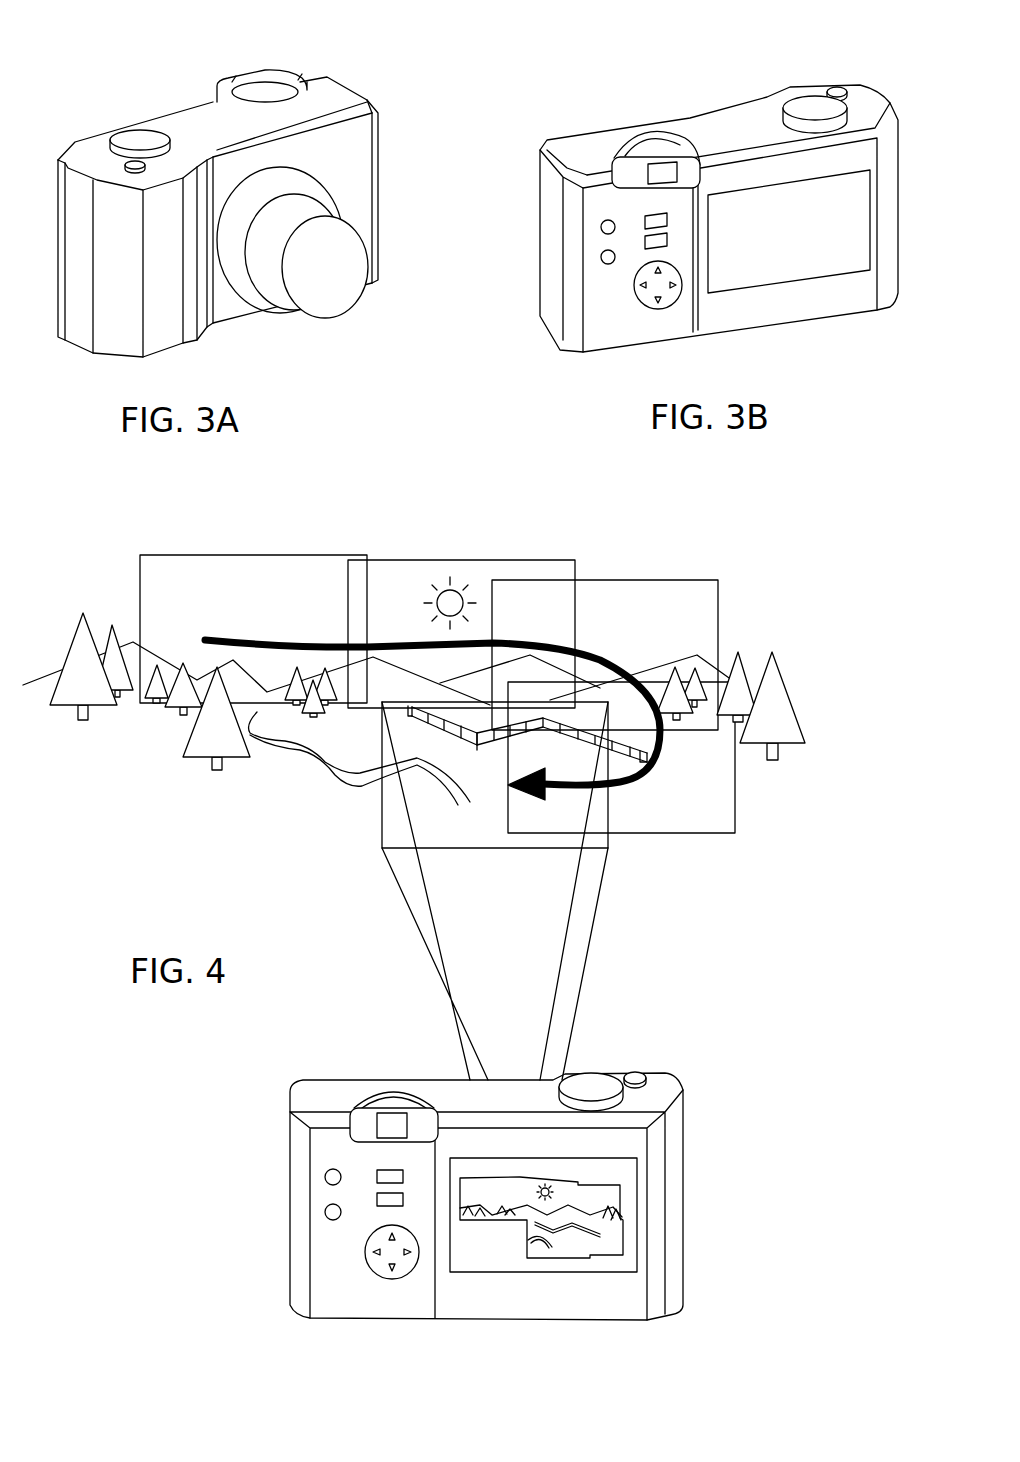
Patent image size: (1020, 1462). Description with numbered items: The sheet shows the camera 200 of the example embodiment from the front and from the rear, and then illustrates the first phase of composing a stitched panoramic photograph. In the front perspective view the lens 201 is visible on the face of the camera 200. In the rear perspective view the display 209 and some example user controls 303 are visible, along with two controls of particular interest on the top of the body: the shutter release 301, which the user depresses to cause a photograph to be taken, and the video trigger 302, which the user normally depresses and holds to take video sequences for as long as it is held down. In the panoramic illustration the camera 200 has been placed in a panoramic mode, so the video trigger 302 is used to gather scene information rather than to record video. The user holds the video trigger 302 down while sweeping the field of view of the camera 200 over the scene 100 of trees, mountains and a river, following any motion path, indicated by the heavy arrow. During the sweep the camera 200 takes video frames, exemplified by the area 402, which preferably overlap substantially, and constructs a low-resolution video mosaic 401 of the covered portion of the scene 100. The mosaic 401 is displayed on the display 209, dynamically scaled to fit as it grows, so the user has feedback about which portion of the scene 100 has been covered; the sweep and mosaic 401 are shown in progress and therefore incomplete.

In FIG. 4, the scene 100 is at (173, 833).
In FIG. 3A, the camera 200 is at (155, 42).
In FIG. 3B, the camera 200 is at (615, 45).
In FIG. 4, the camera 200 is at (290, 1197).
In FIG. 3A, the lens 201 is at (330, 293).
In FIG. 3B, the display 209 is at (777, 238).
In FIG. 4, the display 209 is at (488, 1245).
In FIG. 3B, the shutter release 301 is at (810, 103).
In FIG. 3B, the video trigger 302 is at (837, 85).
In FIG. 4, the video trigger 302 is at (635, 1073).
In FIG. 3B, the user controls 303 is at (609, 264).
In FIG. 4, the low-resolution video mosaic 401 is at (568, 1243).
In FIG. 4, the area 402 is at (140, 590).